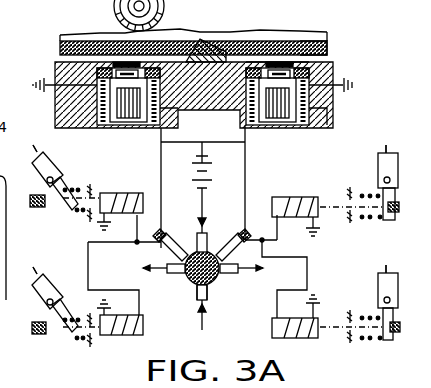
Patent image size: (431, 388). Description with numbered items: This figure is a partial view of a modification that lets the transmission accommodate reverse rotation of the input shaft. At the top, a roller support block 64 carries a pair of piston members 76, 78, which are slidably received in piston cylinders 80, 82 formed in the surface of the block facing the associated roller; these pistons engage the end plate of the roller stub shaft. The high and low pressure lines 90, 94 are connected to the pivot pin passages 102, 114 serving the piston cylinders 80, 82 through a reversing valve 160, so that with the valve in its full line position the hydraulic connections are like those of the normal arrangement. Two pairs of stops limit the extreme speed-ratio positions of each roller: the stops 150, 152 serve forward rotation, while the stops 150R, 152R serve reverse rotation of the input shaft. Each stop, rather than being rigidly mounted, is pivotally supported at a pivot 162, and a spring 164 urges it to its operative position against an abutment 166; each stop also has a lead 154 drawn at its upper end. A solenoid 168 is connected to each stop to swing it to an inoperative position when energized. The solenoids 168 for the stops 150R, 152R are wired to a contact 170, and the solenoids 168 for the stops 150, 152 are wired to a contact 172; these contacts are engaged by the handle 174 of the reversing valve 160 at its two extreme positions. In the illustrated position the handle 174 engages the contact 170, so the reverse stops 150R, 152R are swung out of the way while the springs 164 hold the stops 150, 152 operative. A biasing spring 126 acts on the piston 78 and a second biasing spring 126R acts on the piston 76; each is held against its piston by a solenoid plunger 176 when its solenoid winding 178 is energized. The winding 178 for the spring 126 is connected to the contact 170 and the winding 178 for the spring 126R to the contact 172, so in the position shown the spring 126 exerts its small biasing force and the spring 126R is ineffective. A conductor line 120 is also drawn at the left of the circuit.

The roller support block 64 is at (218, 100).
The piston member 76 is at (62, 44).
The piston member 78 is at (327, 50).
The piston cylinder 80 is at (153, 62).
The piston cylinder 82 is at (252, 57).
The high pressure line 90 is at (206, 250).
The low pressure line 94 is at (194, 290).
The pivot pin passage 102 is at (138, 282).
The pivot pin passage 114 is at (258, 283).
The conductor line 120 is at (7, 217).
The biasing spring 126 is at (281, 61).
The biasing spring 126R is at (124, 66).
The stop screw 150 is at (380, 160).
The stop 150R is at (50, 168).
The stop screw 152 is at (382, 288).
The stop 152R is at (62, 282).
The armature lead 154 is at (52, 137).
The reversing valve 160 is at (211, 288).
The pivot 162 is at (47, 181).
The spring 164 is at (82, 216).
The abutment 166 is at (40, 207).
The solenoid 168 is at (114, 193).
The contact 170 is at (170, 233).
The contact 172 is at (222, 255).
The handle 174 is at (181, 250).
The solenoid plunger 176 is at (135, 118).
The solenoid winding 178 is at (107, 120).